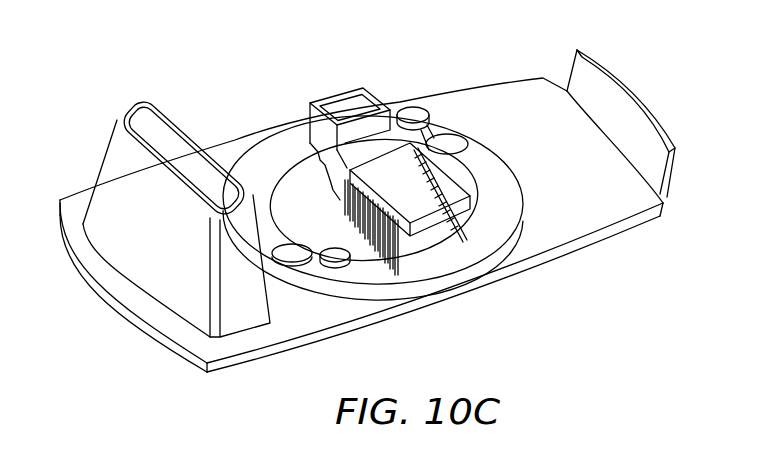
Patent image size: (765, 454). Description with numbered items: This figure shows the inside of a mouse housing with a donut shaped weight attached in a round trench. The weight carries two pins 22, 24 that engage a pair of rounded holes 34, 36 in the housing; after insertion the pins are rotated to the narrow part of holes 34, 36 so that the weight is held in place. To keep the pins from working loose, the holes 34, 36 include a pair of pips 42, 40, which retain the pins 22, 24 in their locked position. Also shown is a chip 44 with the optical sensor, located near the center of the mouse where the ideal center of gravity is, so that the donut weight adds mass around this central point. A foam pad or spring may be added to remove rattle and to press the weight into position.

The pin 22 is at (413, 117).
The pin 24 is at (333, 250).
The hole 34 is at (455, 134).
The hole 36 is at (253, 192).
The pip 40 is at (303, 267).
The pip 42 is at (455, 243).
The chip 44 is at (393, 180).